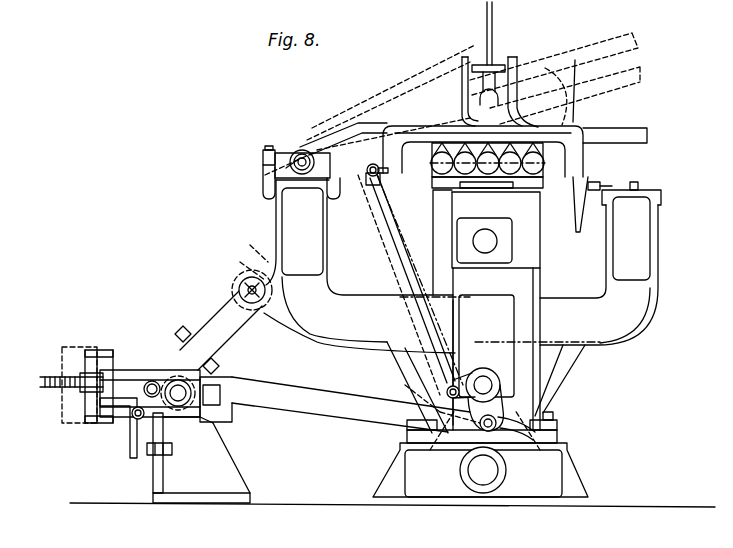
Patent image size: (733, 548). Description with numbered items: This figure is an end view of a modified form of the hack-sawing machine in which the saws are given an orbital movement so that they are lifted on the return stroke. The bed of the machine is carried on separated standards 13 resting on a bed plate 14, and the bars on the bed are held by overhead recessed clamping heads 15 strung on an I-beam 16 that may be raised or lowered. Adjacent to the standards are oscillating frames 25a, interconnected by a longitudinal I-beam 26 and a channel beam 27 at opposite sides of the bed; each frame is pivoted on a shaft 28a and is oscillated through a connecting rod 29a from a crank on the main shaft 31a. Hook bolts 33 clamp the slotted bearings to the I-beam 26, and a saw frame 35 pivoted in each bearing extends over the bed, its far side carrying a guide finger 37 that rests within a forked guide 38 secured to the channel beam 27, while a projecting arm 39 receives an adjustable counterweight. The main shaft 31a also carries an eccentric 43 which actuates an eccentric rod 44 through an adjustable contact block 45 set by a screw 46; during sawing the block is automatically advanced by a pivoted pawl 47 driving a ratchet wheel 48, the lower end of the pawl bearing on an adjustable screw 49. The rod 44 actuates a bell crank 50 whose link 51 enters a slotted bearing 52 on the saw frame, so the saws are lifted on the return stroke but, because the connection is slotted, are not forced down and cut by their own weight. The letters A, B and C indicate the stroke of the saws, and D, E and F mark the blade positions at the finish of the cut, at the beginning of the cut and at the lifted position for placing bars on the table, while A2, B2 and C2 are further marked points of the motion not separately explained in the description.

The standard 13 is at (528, 318).
The bed plate 14 is at (573, 470).
The clamping head 15 is at (460, 70).
The I-beam 16 is at (493, 15).
The oscillating frame 25a is at (614, 328).
The longitudinal I-beam 26 is at (273, 182).
The channel beam 27 is at (661, 196).
The pivot shaft 28a is at (483, 485).
The connecting rod 29a is at (223, 317).
The main shaft 31a is at (180, 377).
The hook bolt 33 is at (263, 158).
The saw frame 35 is at (373, 130).
The guide finger 37 is at (578, 233).
The forked guide 38 is at (593, 188).
The projecting arm 39 is at (630, 42).
The eccentric 43 is at (197, 413).
The eccentric rod 44 is at (327, 410).
The adjustable contact block 45 is at (140, 375).
The adjusting screw 46 is at (55, 377).
The pivoted pawl 47 is at (133, 430).
The ratchet wheel 48 is at (100, 417).
The adjustable screw 49 is at (150, 453).
The bell crank 50 is at (547, 405).
The link 51 is at (397, 273).
The slotted bearing 52 is at (367, 187).
The stroke position A is at (290, 165).
The stroke position B is at (297, 150).
The stroke position C is at (306, 148).
The saw blade position at finish of cut D is at (497, 189).
The saw blade position at beginning of cut E is at (480, 151).
The lifted saw blade position F is at (560, 92).
The pivot point A2 is at (240, 286).
The pivot point B2 is at (239, 260).
The pivot point C2 is at (248, 243).